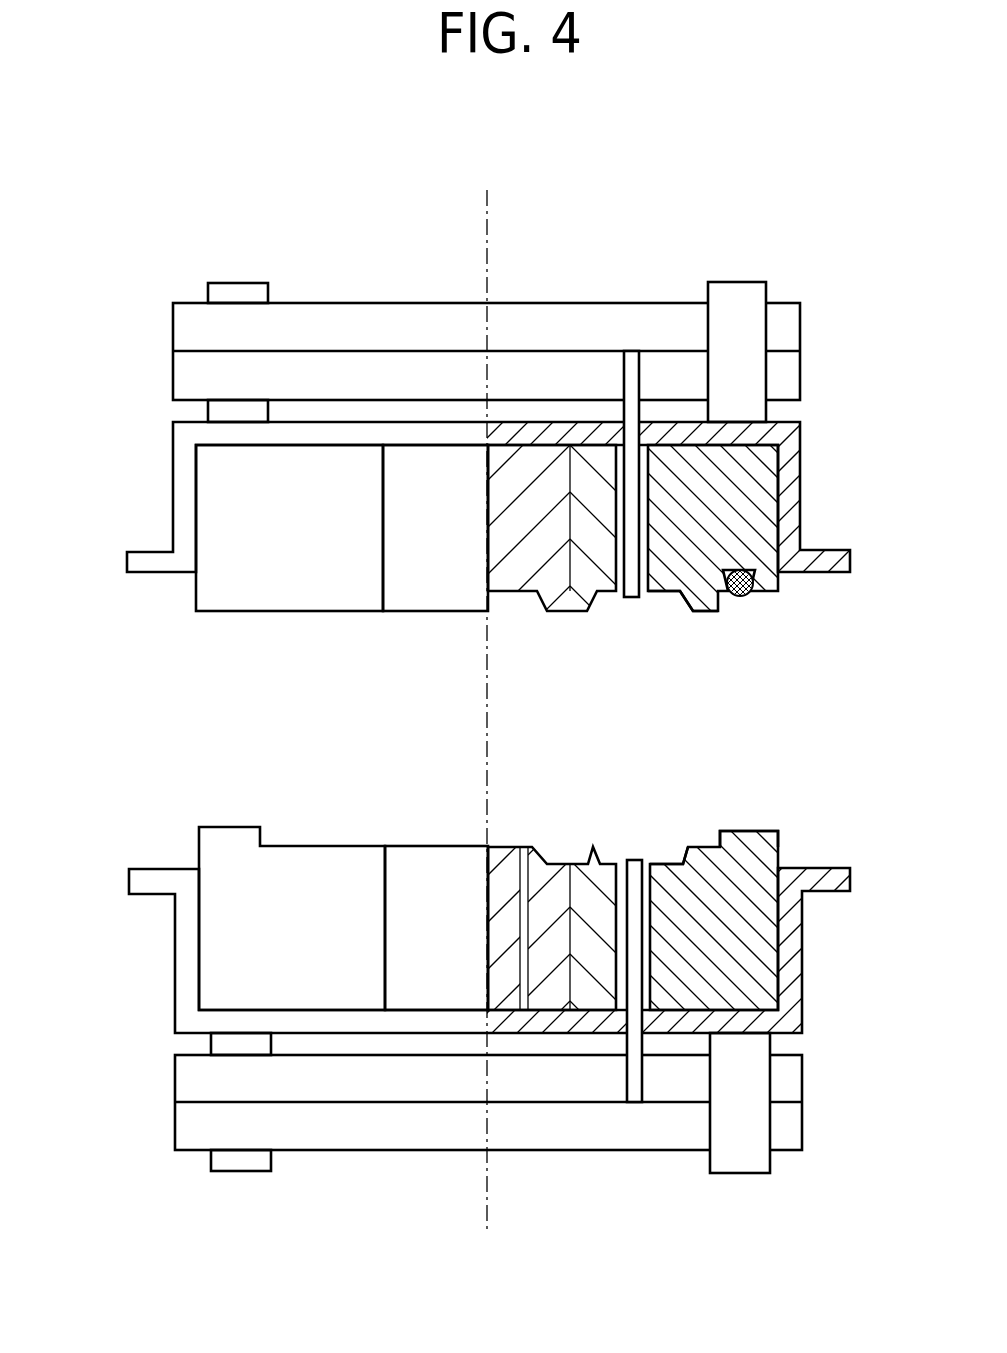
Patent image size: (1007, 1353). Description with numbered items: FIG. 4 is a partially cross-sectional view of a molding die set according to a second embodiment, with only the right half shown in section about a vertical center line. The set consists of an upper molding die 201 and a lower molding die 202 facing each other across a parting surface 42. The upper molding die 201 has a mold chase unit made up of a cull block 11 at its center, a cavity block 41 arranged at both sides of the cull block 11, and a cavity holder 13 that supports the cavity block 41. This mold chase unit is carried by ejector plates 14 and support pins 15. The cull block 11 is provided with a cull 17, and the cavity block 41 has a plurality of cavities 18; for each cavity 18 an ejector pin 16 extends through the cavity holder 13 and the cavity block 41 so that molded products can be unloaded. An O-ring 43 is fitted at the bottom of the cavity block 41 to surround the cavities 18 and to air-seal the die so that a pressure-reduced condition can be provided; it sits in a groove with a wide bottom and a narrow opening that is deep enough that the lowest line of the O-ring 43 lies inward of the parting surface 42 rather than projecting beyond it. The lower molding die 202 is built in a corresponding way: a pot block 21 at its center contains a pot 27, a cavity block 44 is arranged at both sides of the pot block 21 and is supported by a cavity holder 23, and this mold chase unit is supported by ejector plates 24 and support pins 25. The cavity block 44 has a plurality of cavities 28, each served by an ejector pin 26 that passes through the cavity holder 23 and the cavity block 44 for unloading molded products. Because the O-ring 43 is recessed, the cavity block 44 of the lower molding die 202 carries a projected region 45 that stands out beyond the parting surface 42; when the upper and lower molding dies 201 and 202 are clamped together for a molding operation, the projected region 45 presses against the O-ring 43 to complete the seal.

The upper molding die 201 is at (146, 493).
The lower molding die 202 is at (146, 955).
The cull block 11 is at (420, 590).
The cavity holder 13 is at (803, 506).
The ejector plates 14 is at (792, 372).
The support pins 15 is at (748, 282).
The ejector pins 16 is at (622, 382).
The cull 17 is at (512, 600).
The cavities 18 is at (653, 600).
The pot block 21 is at (413, 860).
The cavity holder 23 is at (793, 972).
The ejector plates 24 is at (793, 1127).
The support pins 25 is at (723, 1163).
The ejector pins 26 is at (635, 860).
The pot 27 is at (525, 852).
The cavities 28 is at (668, 860).
The cavity block 41 is at (773, 457).
The parting surface 42 is at (295, 611).
The O-ring 43 is at (747, 611).
The cavity block 44 is at (780, 846).
The projected region 45 is at (737, 831).